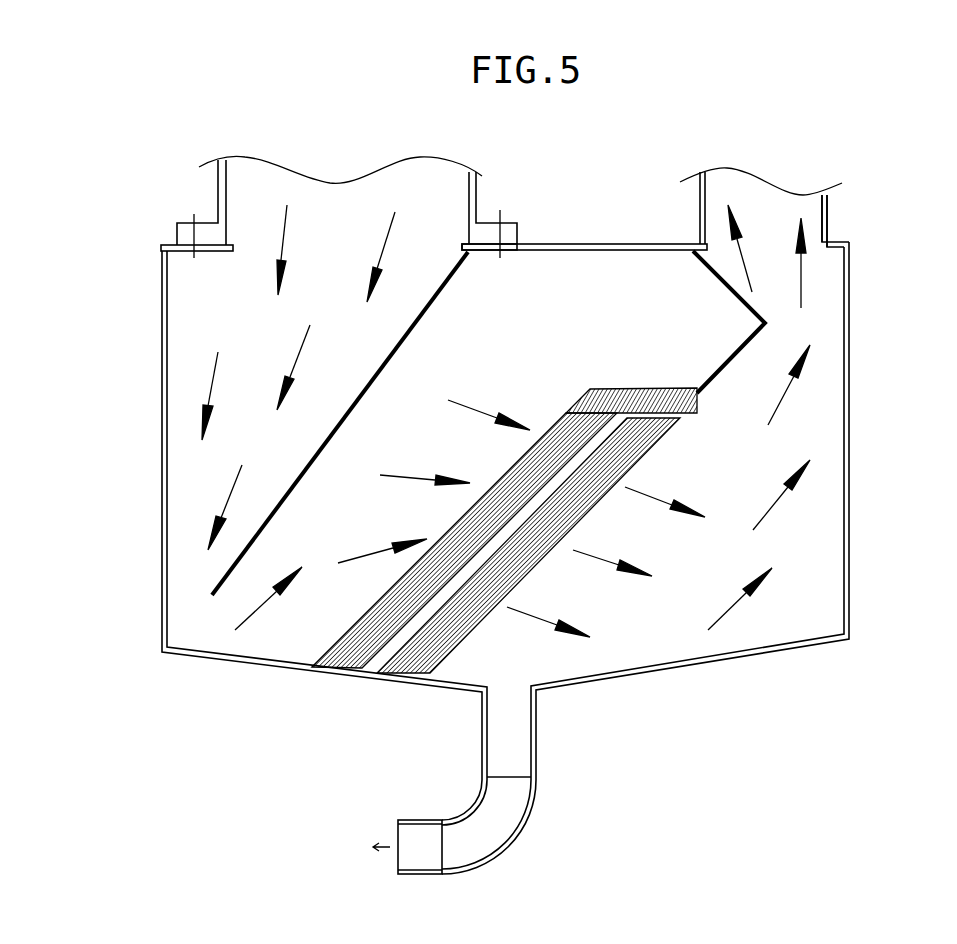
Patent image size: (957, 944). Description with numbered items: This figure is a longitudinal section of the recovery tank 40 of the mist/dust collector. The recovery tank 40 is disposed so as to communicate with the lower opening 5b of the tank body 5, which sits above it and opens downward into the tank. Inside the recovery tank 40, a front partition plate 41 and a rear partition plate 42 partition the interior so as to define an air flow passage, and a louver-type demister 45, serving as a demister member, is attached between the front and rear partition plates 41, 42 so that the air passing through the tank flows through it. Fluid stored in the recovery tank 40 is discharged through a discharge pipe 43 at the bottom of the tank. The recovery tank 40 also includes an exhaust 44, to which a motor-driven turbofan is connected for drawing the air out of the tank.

The tank body 5 is at (217, 187).
The lower opening 5b is at (463, 237).
The recovery tank 40 is at (851, 268).
The front partition plate 41 is at (307, 461).
The rear partition plate 42 is at (683, 416).
The discharge pipe 43 is at (538, 760).
The exhaust 44 is at (826, 210).
The louver-type demister 45 is at (591, 408).